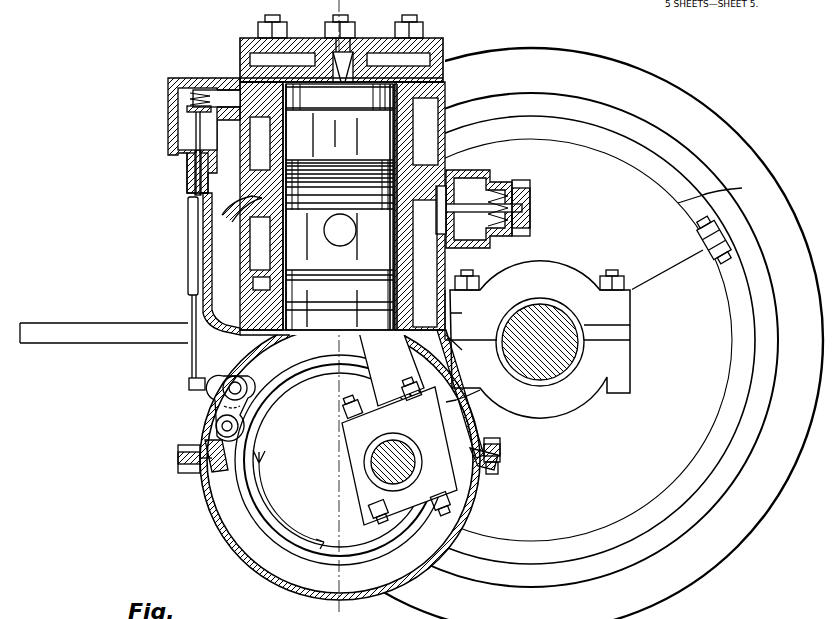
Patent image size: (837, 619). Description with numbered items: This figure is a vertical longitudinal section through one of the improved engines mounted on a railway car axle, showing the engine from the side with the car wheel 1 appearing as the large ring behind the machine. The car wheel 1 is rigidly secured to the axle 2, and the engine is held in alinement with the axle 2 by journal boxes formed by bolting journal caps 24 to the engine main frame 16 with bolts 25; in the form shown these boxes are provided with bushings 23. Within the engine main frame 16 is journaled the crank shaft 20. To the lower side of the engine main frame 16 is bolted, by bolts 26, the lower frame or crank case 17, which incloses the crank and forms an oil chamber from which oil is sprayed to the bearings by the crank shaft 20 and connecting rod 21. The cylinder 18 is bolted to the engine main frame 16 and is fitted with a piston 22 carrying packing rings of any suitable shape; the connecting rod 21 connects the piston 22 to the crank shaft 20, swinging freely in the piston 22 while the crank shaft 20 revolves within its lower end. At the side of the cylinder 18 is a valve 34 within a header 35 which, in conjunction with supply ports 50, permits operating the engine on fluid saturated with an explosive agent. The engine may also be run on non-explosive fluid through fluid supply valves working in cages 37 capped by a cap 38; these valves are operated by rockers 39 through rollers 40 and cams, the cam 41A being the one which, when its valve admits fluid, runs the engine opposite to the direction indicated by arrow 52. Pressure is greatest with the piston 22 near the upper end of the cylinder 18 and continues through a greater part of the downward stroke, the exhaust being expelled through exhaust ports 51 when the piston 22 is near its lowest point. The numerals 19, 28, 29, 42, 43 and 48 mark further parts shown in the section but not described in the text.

The car wheel 1 is at (745, 530).
The axle 2 is at (572, 332).
The engine main frame 16 is at (463, 412).
The crank case 17 is at (480, 497).
The cylinder 18 is at (203, 242).
The cylinder head 19 is at (240, 58).
The crank shaft 20 is at (210, 514).
The connecting rod 21 is at (372, 392).
The piston 22 is at (339, 207).
The bushing 23 is at (582, 350).
The journal cap 24 is at (622, 303).
The bolt 25 is at (632, 258).
The bolt 26 is at (178, 478).
The cylinder head nuts 28 is at (410, 15).
The supporting bracket 29 is at (30, 343).
The valve 34 is at (446, 190).
The header 35 is at (500, 182).
The cage 37 is at (188, 210).
The cap 38 is at (178, 80).
The rocker 39 is at (189, 382).
The roller 40 is at (205, 440).
The cam 41A is at (262, 392).
The flywheel rim 42 is at (724, 189).
The flywheel bolt 43 is at (728, 252).
The inlet valve 48 is at (187, 126).
The supply port 50 is at (428, 219).
The exhaust port 51 is at (275, 200).
The arrow 52 is at (207, 170).